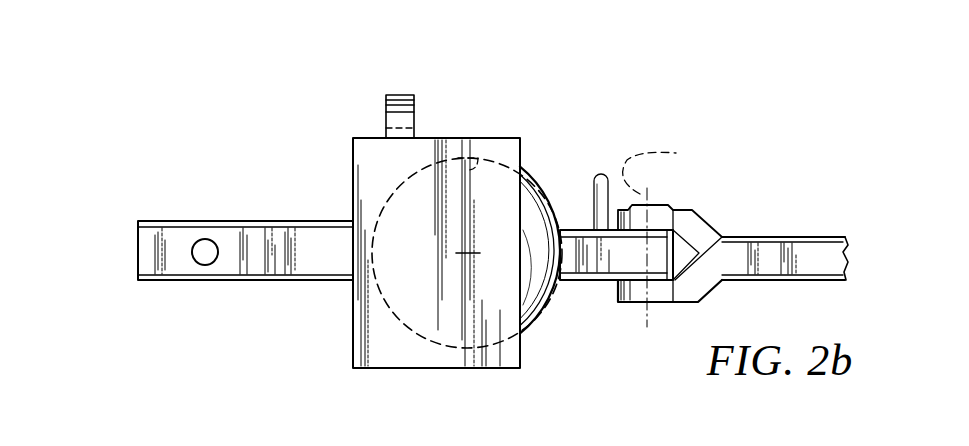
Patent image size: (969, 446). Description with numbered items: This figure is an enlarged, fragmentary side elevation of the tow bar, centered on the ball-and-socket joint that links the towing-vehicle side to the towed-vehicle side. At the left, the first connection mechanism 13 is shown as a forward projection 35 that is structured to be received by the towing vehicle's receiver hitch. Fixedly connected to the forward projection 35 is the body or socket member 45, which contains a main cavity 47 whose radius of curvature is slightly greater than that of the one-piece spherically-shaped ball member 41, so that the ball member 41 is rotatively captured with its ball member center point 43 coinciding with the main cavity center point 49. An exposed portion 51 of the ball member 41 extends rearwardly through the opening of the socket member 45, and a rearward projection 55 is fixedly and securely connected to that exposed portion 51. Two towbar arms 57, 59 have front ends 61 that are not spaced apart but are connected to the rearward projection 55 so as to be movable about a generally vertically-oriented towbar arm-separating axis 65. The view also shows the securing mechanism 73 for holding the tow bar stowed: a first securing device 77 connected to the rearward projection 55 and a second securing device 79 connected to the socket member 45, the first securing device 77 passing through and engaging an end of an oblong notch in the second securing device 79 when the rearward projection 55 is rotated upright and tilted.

The first connection mechanism 13 is at (161, 222).
The forward projection 35 is at (225, 235).
The socket member 45 is at (353, 157).
The securing mechanism 73 is at (386, 96).
The second securing device 79 is at (388, 113).
The main cavity 47 is at (478, 158).
The ball member center point 43 is at (469, 252).
The main cavity center point 49 is at (467, 255).
The ball member 41 is at (528, 172).
The exposed portion 51 is at (533, 200).
The first securing device 77 is at (599, 176).
The rearward projection 55 is at (628, 262).
The towbar arm 57 is at (684, 220).
The front end 61 is at (717, 260).
The towbar arm 59 is at (823, 258).
The towbar arm-separating axis 65 is at (665, 168).